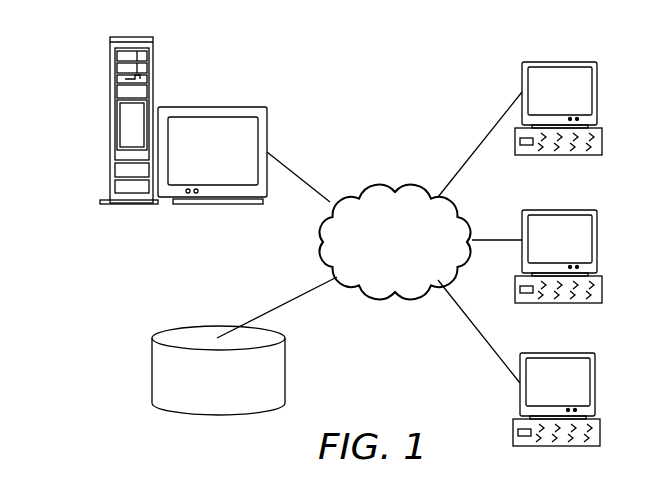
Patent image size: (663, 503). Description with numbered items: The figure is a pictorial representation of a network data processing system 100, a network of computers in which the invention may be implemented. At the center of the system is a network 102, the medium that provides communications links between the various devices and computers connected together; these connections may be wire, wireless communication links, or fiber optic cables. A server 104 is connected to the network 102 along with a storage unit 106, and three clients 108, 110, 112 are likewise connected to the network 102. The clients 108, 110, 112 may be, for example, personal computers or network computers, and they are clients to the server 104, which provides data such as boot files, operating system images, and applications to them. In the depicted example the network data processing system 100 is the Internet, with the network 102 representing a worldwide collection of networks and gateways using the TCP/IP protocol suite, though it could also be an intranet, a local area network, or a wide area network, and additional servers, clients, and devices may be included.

The network data processing system 100 is at (428, 68).
The network 102 is at (365, 193).
The server 104 is at (215, 107).
The storage unit 106 is at (152, 370).
The client 108 is at (597, 92).
The client 110 is at (596, 240).
The client 112 is at (595, 385).